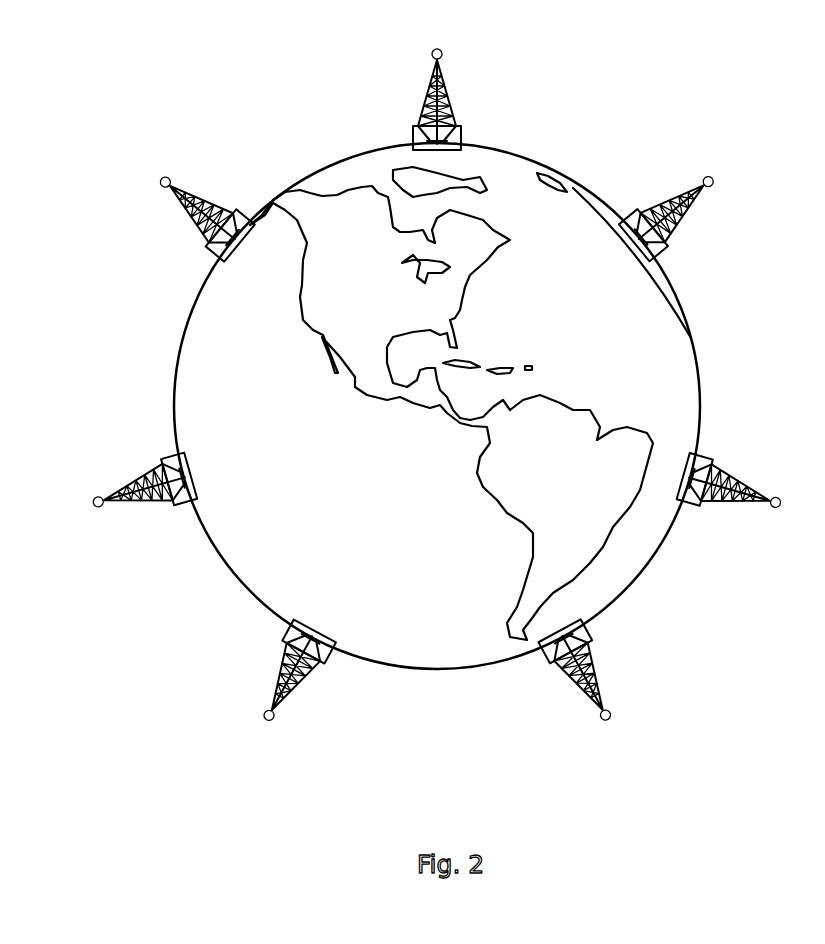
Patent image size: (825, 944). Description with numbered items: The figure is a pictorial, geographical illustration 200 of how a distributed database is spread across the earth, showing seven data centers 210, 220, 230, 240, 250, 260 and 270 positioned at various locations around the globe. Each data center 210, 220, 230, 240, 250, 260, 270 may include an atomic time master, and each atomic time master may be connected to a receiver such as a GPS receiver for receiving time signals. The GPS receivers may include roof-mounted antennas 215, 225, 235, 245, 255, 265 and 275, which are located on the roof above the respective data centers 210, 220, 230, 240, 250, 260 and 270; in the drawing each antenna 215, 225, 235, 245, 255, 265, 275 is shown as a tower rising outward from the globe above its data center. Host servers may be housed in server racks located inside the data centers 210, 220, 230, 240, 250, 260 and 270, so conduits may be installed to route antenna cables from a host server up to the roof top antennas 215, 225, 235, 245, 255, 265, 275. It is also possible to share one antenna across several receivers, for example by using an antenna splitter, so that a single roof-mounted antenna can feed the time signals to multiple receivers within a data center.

The globe / Earth network environment 200 is at (551, 172).
The data center 210 is at (708, 462).
The roof-mounted antenna 215 is at (722, 503).
The data center 220 is at (543, 660).
The roof-mounted antenna 225 is at (586, 675).
The data center 230 is at (328, 660).
The roof-mounted antenna 235 is at (288, 673).
The data center 240 is at (167, 460).
The roof-mounted antenna 245 is at (150, 503).
The data center 250 is at (208, 248).
The roof-mounted antenna 255 is at (200, 205).
The data center 260 is at (462, 138).
The roof-mounted antenna 265 is at (432, 83).
The data center 270 is at (665, 247).
The roof-mounted antenna 275 is at (678, 205).